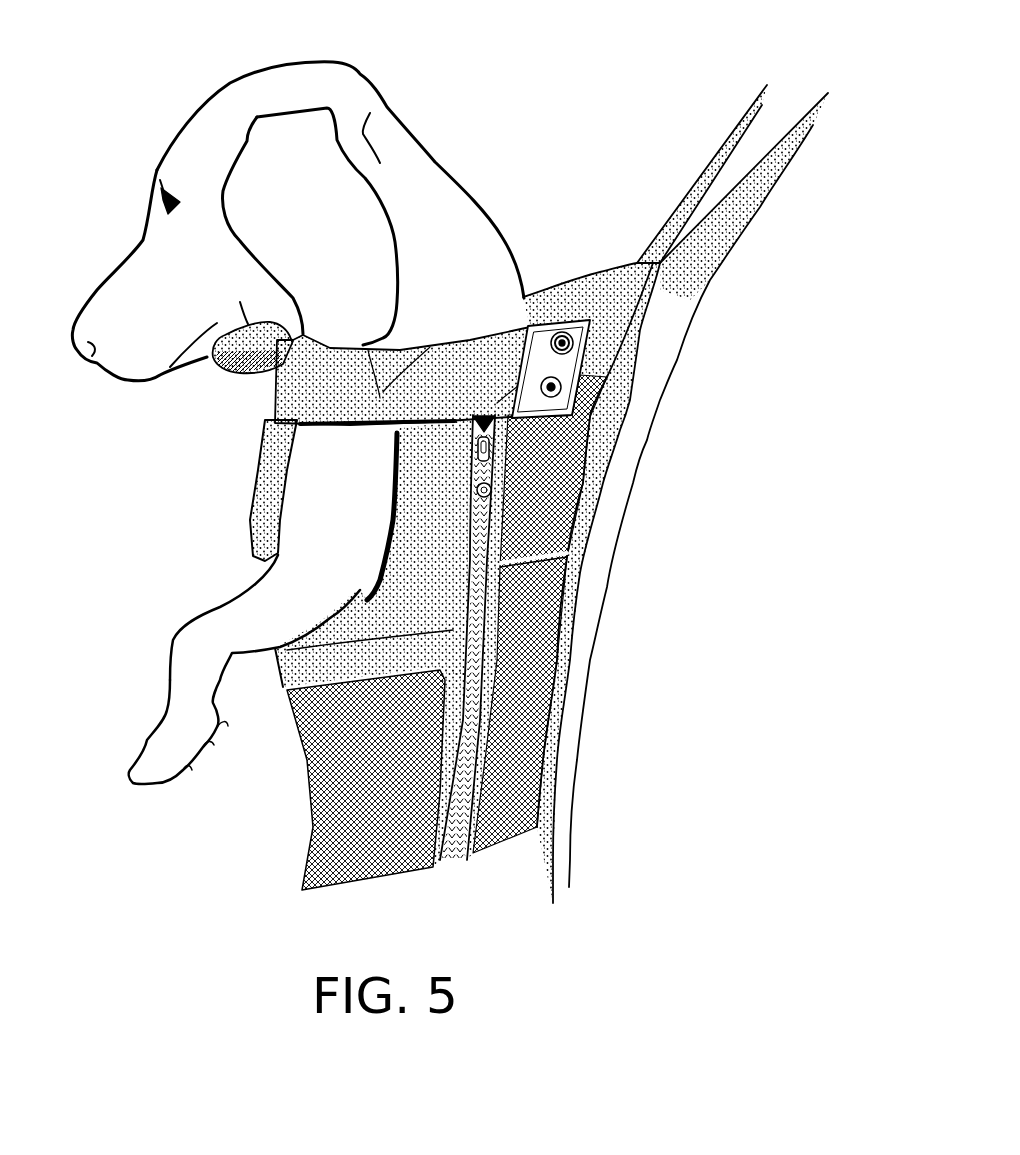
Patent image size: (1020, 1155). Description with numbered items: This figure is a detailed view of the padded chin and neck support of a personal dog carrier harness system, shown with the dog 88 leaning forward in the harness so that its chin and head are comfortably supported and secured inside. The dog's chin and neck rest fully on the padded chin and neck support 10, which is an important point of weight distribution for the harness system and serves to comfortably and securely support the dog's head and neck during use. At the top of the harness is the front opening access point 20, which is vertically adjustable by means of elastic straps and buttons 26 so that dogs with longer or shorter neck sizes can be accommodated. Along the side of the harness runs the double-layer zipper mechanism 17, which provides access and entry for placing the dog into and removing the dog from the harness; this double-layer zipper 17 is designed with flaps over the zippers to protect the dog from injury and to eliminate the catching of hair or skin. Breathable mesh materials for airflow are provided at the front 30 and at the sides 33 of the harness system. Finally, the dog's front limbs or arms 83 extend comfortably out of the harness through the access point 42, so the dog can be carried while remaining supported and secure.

The dog 88 is at (340, 77).
The front opening access point 20 is at (560, 283).
The buttons 26 is at (566, 364).
The double-layer zipper mechanism 17 is at (486, 478).
The sides 33 is at (513, 693).
The front 30 is at (345, 829).
The front limbs or arms 83 is at (190, 653).
The access point 42 is at (370, 447).
The padded chin and neck support 10 is at (214, 367).